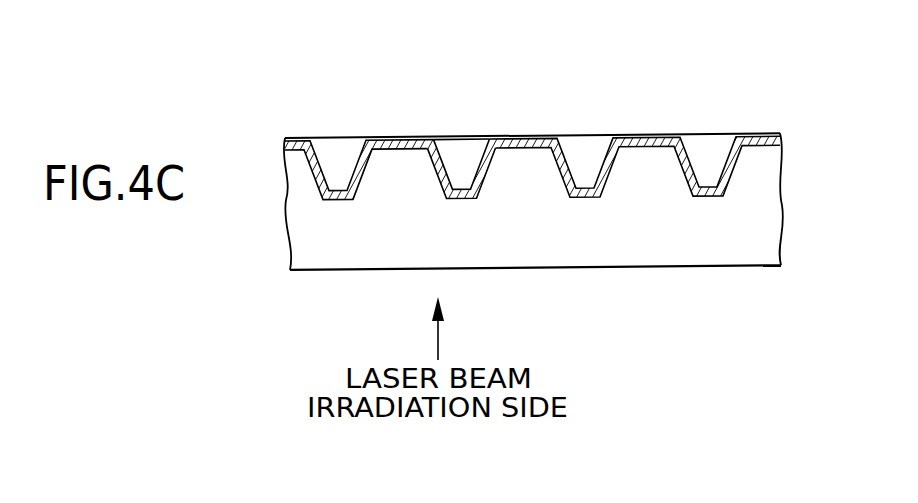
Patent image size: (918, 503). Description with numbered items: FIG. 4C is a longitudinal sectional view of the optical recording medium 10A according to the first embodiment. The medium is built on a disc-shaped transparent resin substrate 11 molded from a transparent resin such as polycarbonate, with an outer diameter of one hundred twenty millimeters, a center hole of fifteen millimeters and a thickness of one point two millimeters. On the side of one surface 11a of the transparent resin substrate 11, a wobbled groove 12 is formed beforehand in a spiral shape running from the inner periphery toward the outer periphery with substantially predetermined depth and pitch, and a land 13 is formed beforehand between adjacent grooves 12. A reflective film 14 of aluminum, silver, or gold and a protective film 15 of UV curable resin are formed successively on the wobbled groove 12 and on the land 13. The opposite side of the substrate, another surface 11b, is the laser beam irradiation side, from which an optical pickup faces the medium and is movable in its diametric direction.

The optical recording medium 10A is at (280, 228).
The transparent resin substrate 11 is at (322, 275).
The one surface 11a is at (702, 141).
The another surface 11b is at (725, 271).
The wobbled groove 12 is at (461, 202).
The land 13 is at (552, 141).
The reflective film 14 is at (439, 155).
The protective film 15 is at (474, 153).